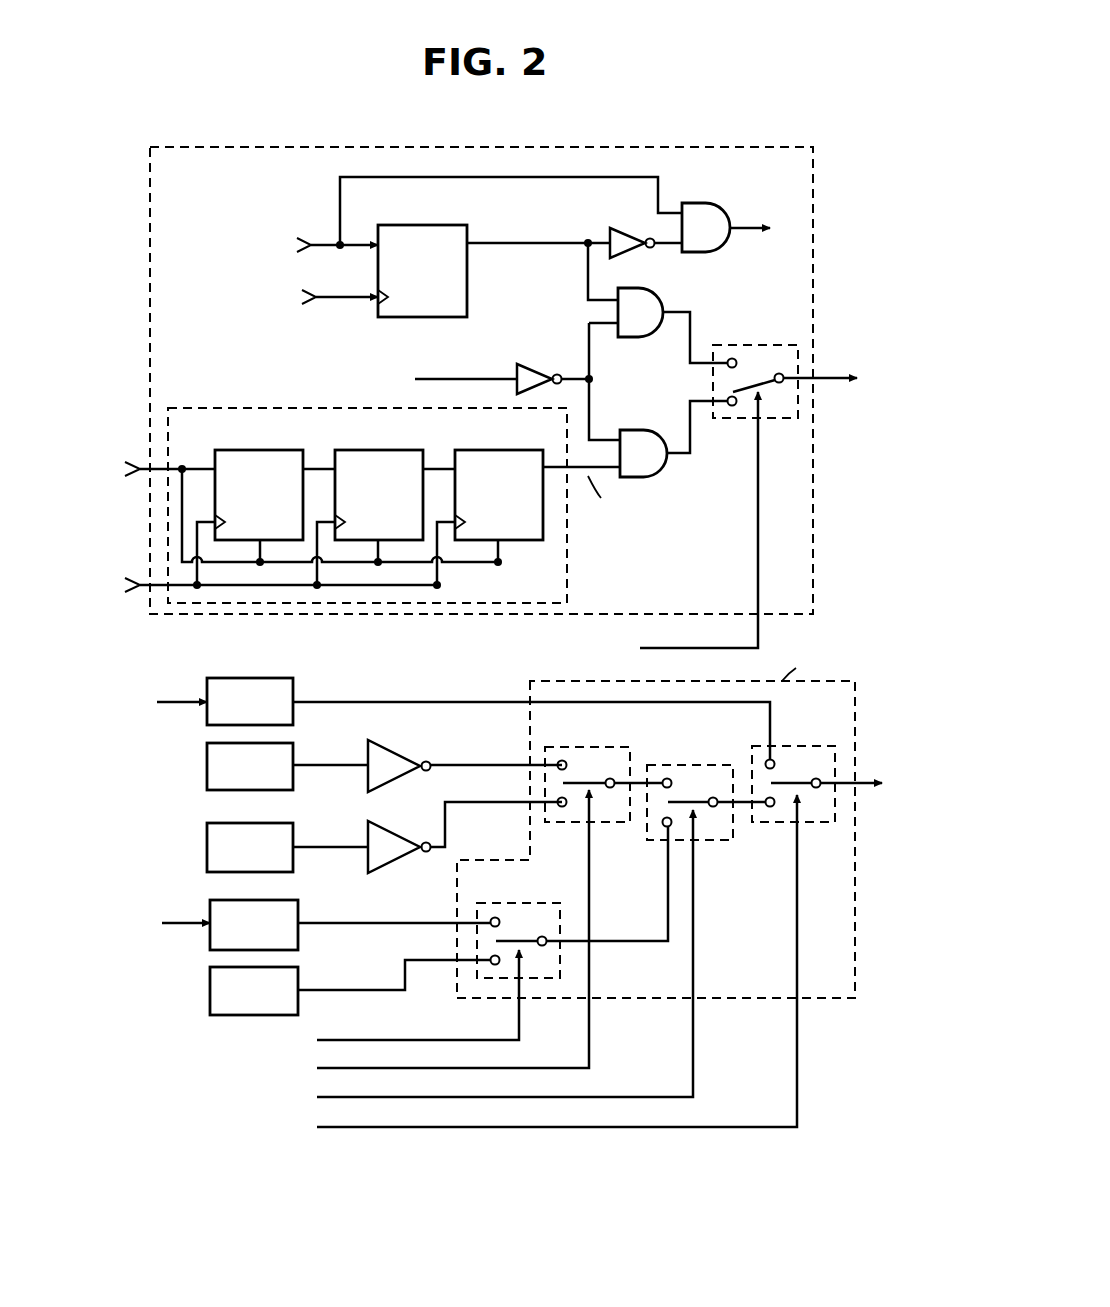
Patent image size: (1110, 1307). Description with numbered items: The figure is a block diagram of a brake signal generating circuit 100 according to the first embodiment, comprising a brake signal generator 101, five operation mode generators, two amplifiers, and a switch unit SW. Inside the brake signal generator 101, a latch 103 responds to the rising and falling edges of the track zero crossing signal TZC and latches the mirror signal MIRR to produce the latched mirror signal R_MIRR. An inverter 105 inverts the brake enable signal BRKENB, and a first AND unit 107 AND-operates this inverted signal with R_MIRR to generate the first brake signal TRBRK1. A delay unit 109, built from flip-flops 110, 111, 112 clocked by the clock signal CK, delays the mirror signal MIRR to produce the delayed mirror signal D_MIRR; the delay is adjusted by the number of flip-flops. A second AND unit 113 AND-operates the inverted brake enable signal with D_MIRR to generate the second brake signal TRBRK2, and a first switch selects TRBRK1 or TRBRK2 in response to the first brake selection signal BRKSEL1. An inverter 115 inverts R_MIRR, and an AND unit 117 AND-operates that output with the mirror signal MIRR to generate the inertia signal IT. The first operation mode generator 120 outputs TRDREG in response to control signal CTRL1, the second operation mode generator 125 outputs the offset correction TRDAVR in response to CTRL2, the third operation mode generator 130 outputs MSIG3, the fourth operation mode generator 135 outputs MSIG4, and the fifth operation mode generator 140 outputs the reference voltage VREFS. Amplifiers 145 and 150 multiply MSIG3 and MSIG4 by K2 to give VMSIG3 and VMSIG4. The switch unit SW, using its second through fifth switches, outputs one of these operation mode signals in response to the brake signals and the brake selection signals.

The brake signal generating circuit 100 is at (788, 127).
The brake signal generator 101 is at (480, 148).
The latch 103 is at (424, 225).
The inverter 105 is at (538, 365).
The first AND unit 107 is at (625, 289).
The delay unit 109 is at (310, 409).
The flip-flop 110 is at (260, 451).
The flip-flop 111 is at (380, 451).
The flip-flop 112 is at (500, 451).
The second AND unit 113 is at (626, 431).
The inverter 115 is at (644, 221).
The AND unit 117 is at (708, 203).
The first operation mode generator 120 is at (206, 696).
The second operation mode generator 125 is at (209, 911).
The third operation mode generator 130 is at (207, 848).
The fourth operation mode generator 135 is at (207, 766).
The fifth operation mode generator 140 is at (210, 991).
The amplifier 145 is at (395, 838).
The amplifier 150 is at (395, 757).